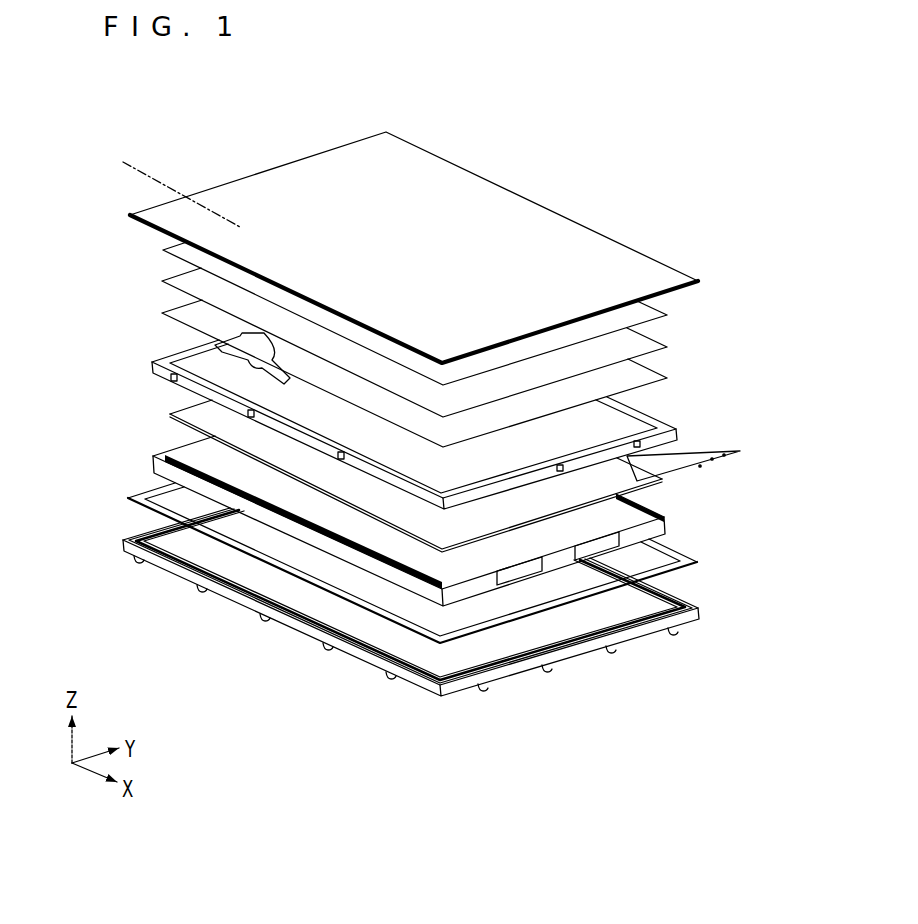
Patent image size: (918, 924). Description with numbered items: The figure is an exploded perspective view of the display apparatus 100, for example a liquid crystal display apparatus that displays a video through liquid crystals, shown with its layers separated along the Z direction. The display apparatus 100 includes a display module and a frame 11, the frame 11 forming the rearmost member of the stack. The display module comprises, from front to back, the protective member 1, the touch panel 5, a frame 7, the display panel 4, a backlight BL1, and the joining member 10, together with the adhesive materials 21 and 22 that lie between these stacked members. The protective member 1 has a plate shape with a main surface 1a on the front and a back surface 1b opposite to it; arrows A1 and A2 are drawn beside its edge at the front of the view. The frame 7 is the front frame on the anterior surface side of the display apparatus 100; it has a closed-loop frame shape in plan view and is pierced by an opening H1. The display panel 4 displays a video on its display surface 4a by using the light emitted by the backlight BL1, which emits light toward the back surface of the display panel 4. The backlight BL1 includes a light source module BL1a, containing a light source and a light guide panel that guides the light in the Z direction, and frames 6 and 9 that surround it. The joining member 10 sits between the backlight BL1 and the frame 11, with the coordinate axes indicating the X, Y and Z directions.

The display apparatus 100 is at (690, 92).
The first region A1 is at (144, 173).
The second region A2 is at (212, 213).
The protective member 1 is at (455, 248).
The main surface 1a is at (643, 270).
The back surface 1b is at (684, 294).
The adhesive material 21 is at (667, 315).
The touch panel 5 is at (667, 347).
The adhesive material 22 is at (667, 378).
The frame 7 is at (450, 412).
The opening H1 is at (195, 365).
The display panel 4 is at (472, 476).
The display surface 4a is at (712, 442).
The frame 6 is at (667, 508).
The light source module BL1a is at (447, 521).
The backlight BL1 is at (471, 521).
The frame 9 is at (653, 537).
The joining member 10 is at (698, 563).
The frame 11 is at (700, 613).